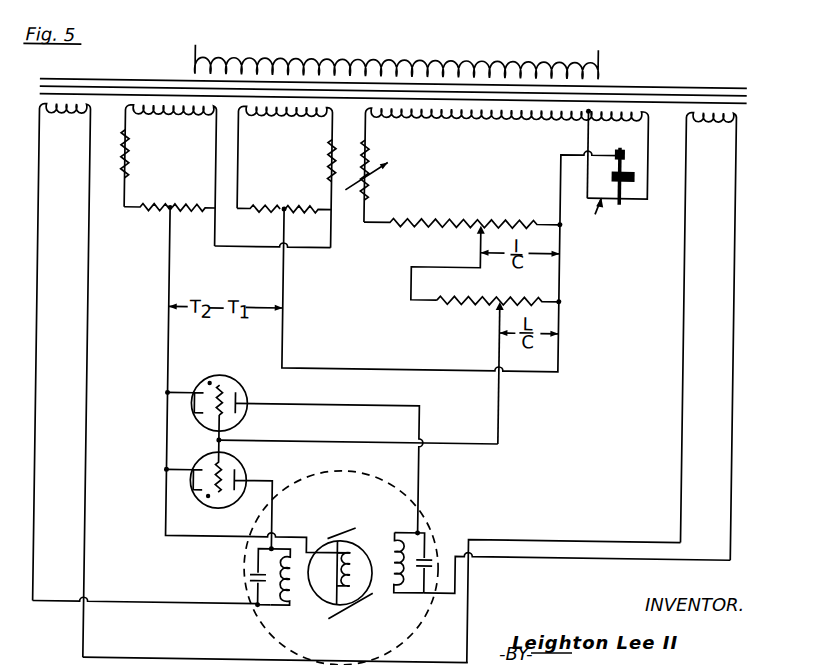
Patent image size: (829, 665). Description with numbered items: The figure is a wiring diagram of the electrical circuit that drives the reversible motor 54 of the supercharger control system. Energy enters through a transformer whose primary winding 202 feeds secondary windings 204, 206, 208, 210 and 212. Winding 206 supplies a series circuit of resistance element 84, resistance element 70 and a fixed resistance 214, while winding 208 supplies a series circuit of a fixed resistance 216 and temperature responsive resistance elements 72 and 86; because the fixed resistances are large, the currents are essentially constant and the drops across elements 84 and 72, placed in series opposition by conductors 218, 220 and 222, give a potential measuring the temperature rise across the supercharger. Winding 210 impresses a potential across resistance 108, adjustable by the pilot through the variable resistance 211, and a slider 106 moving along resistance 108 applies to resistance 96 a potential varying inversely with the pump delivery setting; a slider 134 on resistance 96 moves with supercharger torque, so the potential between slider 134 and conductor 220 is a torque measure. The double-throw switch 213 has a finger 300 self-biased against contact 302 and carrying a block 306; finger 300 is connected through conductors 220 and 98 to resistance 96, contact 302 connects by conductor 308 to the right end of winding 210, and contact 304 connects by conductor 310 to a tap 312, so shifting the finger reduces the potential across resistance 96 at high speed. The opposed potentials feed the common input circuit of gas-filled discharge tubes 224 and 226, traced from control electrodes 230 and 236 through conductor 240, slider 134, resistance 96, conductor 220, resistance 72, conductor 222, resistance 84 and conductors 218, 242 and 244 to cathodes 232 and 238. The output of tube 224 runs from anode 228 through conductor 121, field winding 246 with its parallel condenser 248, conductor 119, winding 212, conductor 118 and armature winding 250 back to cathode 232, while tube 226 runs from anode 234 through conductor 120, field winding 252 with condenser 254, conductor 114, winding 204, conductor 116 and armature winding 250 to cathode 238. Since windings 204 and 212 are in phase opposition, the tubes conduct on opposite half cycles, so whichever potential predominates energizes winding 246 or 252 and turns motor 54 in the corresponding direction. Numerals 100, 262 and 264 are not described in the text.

The primary winding 202 is at (599, 60).
The secondary winding 204 is at (47, 106).
The secondary winding 206 is at (204, 110).
The secondary winding 208 is at (264, 110).
The secondary winding 210 is at (442, 106).
The secondary winding 212 is at (692, 110).
The fixed resistance 214 is at (132, 148).
The fixed resistance 216 is at (332, 151).
The resistance element 70 is at (171, 203).
The resistance element 84 is at (213, 202).
The temperature responsive resistance element 86 is at (286, 203).
The temperature responsive resistance element 72 is at (328, 203).
The conductor 222 is at (270, 242).
The conductor 218 is at (172, 260).
The variable resistance 211 is at (373, 185).
The resistance 108 is at (428, 222).
The slider 106 is at (482, 220).
The conductor 100 is at (415, 274).
The conductor 98 is at (552, 291).
The resistance 96 is at (447, 294).
The slider 134 is at (502, 307).
The conductor 220 is at (311, 363).
The tap 312 is at (590, 112).
The conductor 310 is at (590, 135).
The conductor 308 is at (650, 134).
The block 306 is at (638, 167).
The finger 300 is at (607, 175).
The contact 304 is at (592, 212).
The contact 302 is at (628, 190).
The double-throw switch 213 is at (623, 198).
The conductor 242 is at (212, 377).
The gas-filled discharge tube 224 is at (223, 374).
The anode 228 is at (243, 394).
The cathode 232 is at (210, 411).
The control electrode 230 is at (245, 421).
The conductor 244 is at (173, 466).
The anode 234 is at (246, 466).
The conductor 120 is at (306, 474).
The control electrode 236 is at (216, 494).
The cathode 238 is at (207, 475).
The gas-filled discharge tube 226 is at (245, 503).
The conductor 240 is at (336, 440).
The conductor 121 is at (425, 411).
The condenser 254 is at (262, 576).
The conductor 114 is at (130, 598).
The conductor 116 is at (138, 656).
The field winding 252 is at (298, 602).
The armature winding 250 is at (348, 573).
The condenser 248 is at (438, 554).
The field winding 246 is at (401, 587).
The motor 54 is at (272, 644).
The conductor 118 is at (688, 440).
The conductor 119 is at (738, 441).
The conductor 262 is at (629, 0).
The conductor 264 is at (604, 8).